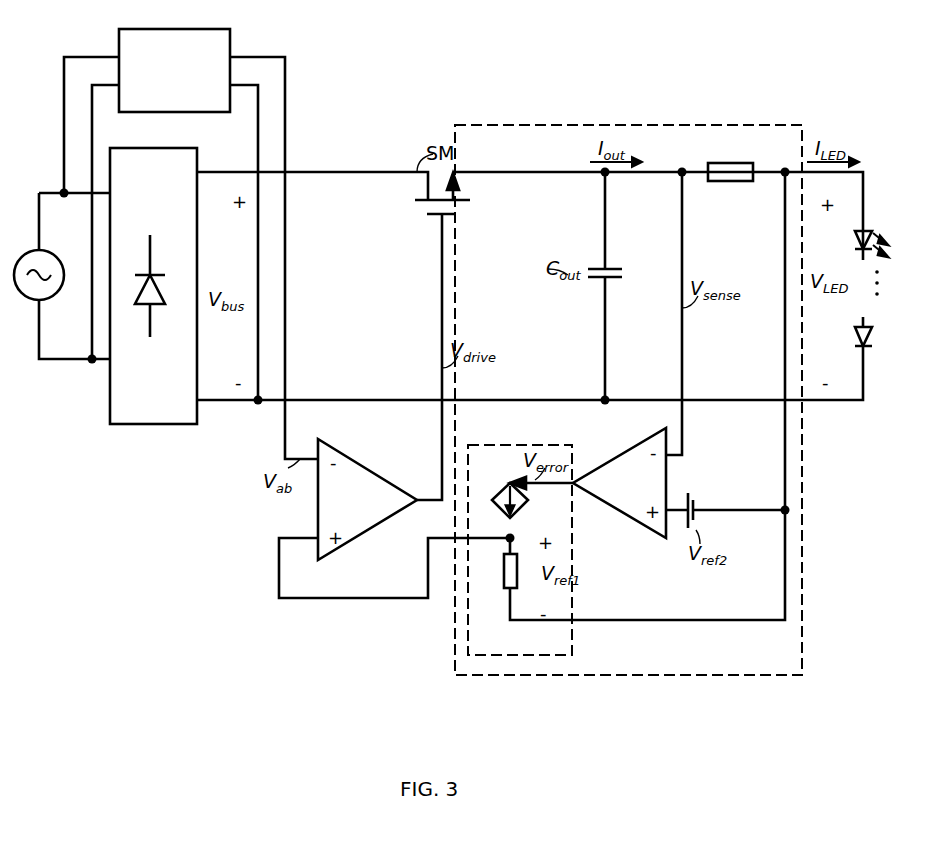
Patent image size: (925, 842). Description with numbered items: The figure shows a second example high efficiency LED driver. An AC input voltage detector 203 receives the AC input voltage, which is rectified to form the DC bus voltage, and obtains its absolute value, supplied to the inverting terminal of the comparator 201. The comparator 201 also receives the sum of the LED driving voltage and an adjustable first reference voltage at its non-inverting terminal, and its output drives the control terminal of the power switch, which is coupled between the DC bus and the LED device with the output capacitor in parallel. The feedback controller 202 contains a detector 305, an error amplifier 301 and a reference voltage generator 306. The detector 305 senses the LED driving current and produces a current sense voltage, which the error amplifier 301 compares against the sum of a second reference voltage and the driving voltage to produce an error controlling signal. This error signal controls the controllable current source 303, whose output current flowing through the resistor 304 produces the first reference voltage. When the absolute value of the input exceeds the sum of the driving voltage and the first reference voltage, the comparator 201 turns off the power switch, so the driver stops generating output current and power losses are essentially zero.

The AC input voltage detector 203 is at (194, 87).
The comparator 201 is at (381, 510).
The feedback controller 202 is at (791, 668).
The error amplifier 301 is at (654, 493).
The controllable current source 303 is at (495, 489).
The resistor 304 is at (503, 580).
The detector 305 is at (710, 163).
The reference voltage generator 306 is at (559, 650).